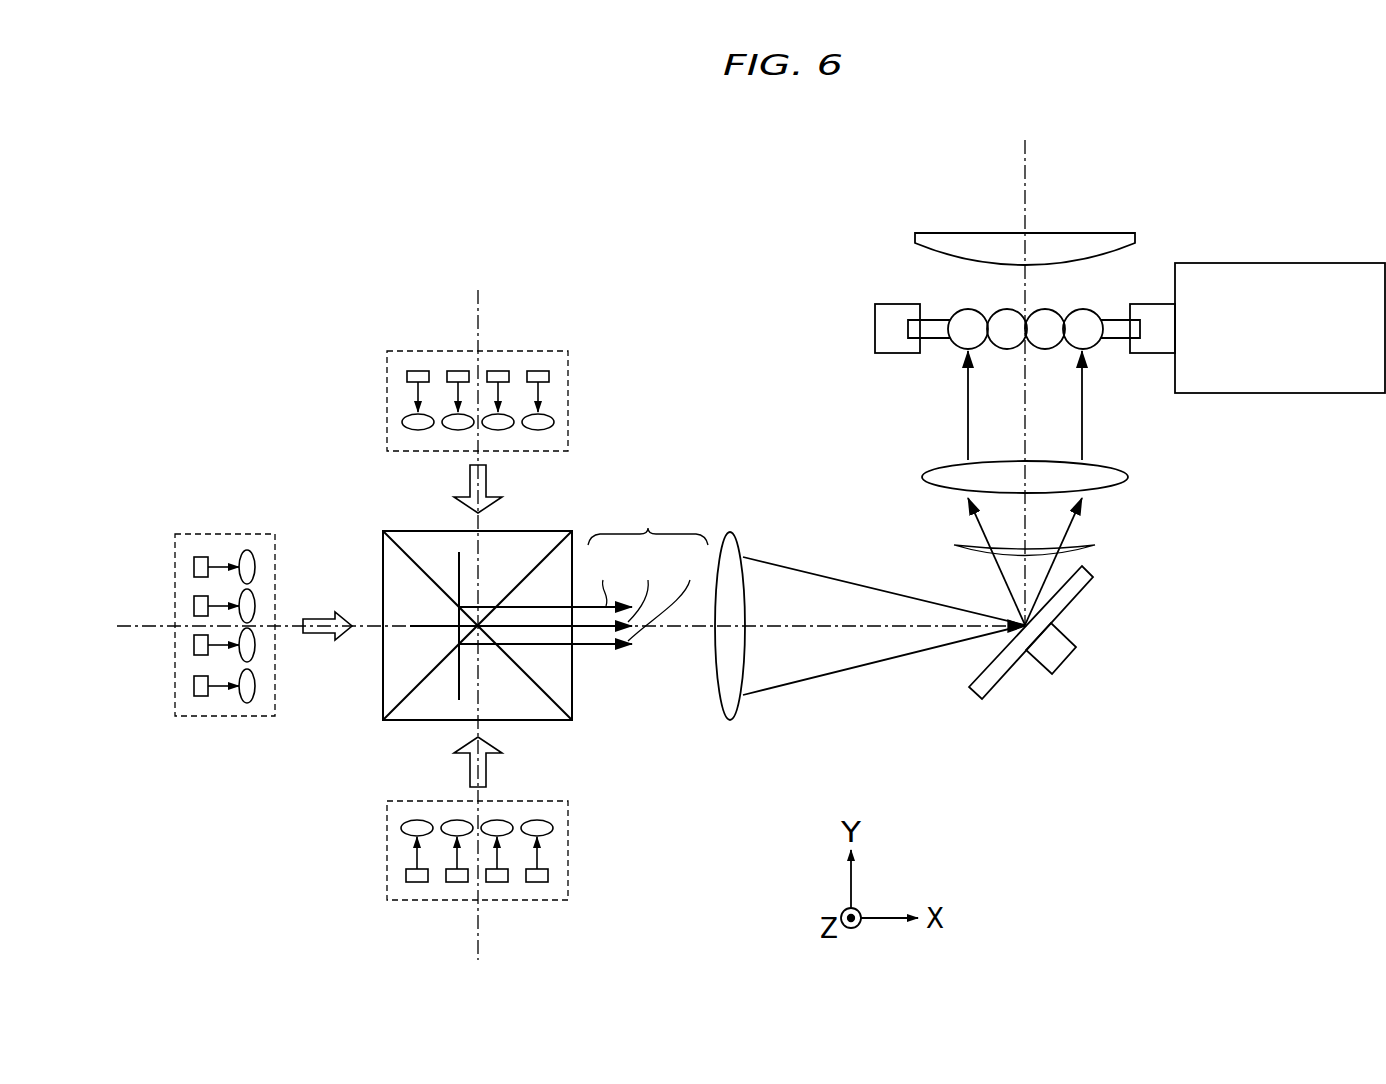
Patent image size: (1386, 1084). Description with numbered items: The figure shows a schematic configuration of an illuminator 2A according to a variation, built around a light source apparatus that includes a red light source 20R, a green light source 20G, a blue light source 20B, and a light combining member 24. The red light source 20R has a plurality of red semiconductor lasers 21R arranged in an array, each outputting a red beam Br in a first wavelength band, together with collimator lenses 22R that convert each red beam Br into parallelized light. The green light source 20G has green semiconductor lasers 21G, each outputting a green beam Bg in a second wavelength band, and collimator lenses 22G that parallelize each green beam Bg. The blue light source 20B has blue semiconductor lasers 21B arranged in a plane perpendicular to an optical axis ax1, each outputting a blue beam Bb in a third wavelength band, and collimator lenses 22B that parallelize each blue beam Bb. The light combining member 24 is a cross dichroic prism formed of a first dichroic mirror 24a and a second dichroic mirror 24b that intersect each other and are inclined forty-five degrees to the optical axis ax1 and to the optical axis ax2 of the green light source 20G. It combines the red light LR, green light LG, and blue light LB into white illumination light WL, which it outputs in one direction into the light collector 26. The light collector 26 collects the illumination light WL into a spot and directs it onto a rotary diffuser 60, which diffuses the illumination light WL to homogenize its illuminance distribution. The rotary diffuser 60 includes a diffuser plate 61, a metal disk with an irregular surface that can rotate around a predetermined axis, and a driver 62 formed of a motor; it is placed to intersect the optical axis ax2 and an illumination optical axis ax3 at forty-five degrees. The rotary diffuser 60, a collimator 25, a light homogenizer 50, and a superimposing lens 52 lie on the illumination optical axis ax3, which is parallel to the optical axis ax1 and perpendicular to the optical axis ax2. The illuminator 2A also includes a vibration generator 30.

The illuminator 2A is at (1232, 188).
The blue light source 20B is at (449, 393).
The green light source 20G is at (209, 635).
The red light source 20R is at (454, 860).
The blue semiconductor lasers 21B is at (552, 377).
The green semiconductor lasers 21G is at (190, 550).
The red semiconductor lasers 21R is at (548, 878).
The collimator lenses 22B is at (548, 423).
The collimator lenses 22G is at (258, 550).
The collimator lenses 22R is at (548, 820).
The light combining member 24 is at (453, 603).
The first dichroic mirror 24a is at (420, 562).
The second dichroic mirror 24b is at (393, 705).
The collimator 25 is at (1130, 478).
The light collector 26 is at (730, 532).
The vibration generator 30 is at (1318, 405).
The light homogenizer 50 is at (955, 305).
The superimposing lens 52 is at (1135, 238).
The rotary diffuser 60 is at (1041, 676).
The diffuser plate 61 is at (993, 677).
The driver 62 is at (1062, 660).
The optical axis ax1 is at (478, 300).
The optical axis ax2 is at (146, 622).
The illumination optical axis ax3 is at (1025, 160).
The blue light LB is at (468, 480).
The green light LG is at (318, 612).
The red light LR is at (468, 772).
The white illumination light WL is at (1097, 547).
The blue beam Bb is at (540, 392).
The green beam Bg is at (215, 563).
The red beam Br is at (540, 860).